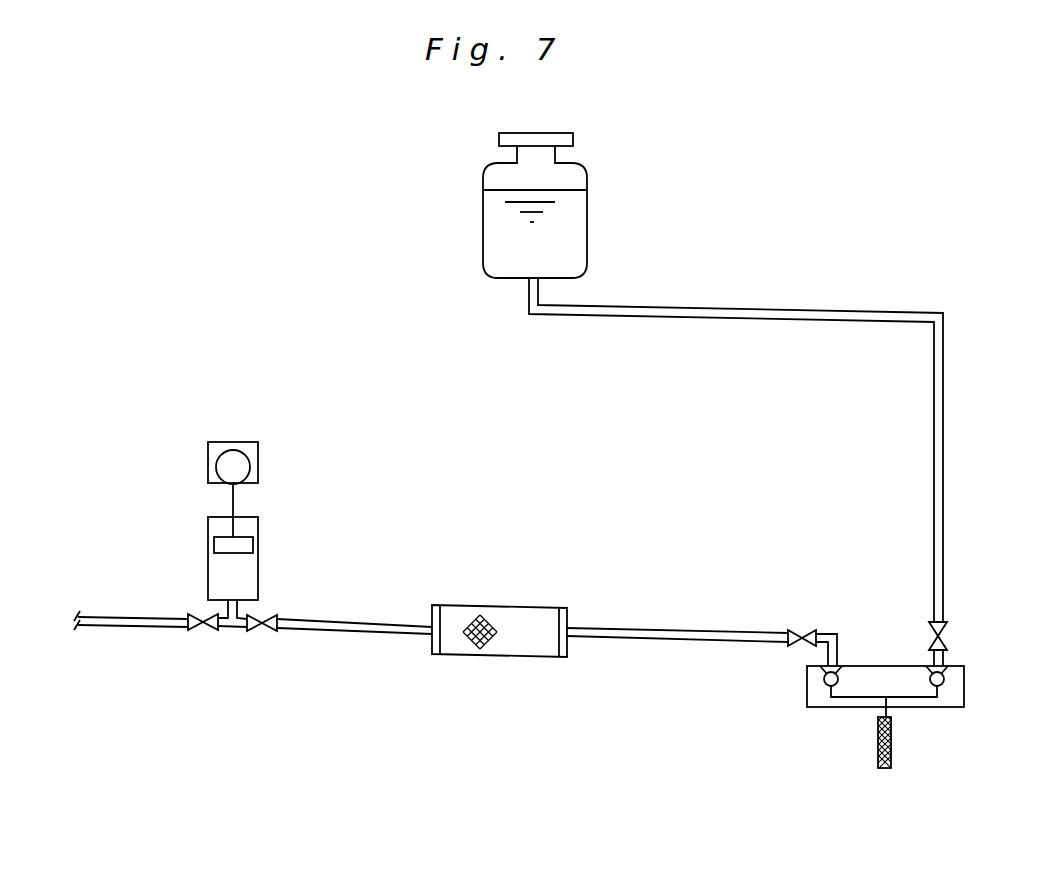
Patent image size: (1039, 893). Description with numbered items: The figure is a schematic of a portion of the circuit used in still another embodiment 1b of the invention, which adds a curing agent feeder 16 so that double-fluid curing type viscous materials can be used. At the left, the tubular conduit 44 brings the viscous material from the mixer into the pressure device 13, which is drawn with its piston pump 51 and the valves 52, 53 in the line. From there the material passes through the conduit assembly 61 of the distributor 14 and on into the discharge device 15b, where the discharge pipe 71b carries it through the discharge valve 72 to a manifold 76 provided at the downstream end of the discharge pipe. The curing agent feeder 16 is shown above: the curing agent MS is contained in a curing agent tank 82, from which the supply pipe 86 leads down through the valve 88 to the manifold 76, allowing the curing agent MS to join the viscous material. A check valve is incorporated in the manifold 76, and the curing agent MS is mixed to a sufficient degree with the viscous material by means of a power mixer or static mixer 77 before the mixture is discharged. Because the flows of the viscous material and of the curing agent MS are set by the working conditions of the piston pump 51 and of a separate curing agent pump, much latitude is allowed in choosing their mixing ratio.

The still another embodiment 1b is at (210, 130).
The pressure device 13 is at (190, 590).
The distributor 14 is at (512, 548).
The discharge device 15b is at (790, 605).
The curing agent feeder 16 is at (283, 268).
The tubular conduit 44 is at (108, 628).
The piston pump 51 is at (258, 568).
The valve 52 is at (196, 632).
The valve 53 is at (263, 632).
The conduit assembly 61 is at (547, 657).
The discharge pipe 71b is at (694, 641).
The discharge valve 72 is at (791, 645).
The manifold 76 is at (826, 708).
The static mixer 77 is at (874, 752).
The curing agent tank 82 is at (587, 222).
The supply pipe 86 is at (848, 314).
The valve 88 is at (947, 640).
The curing agent MS is at (548, 250).